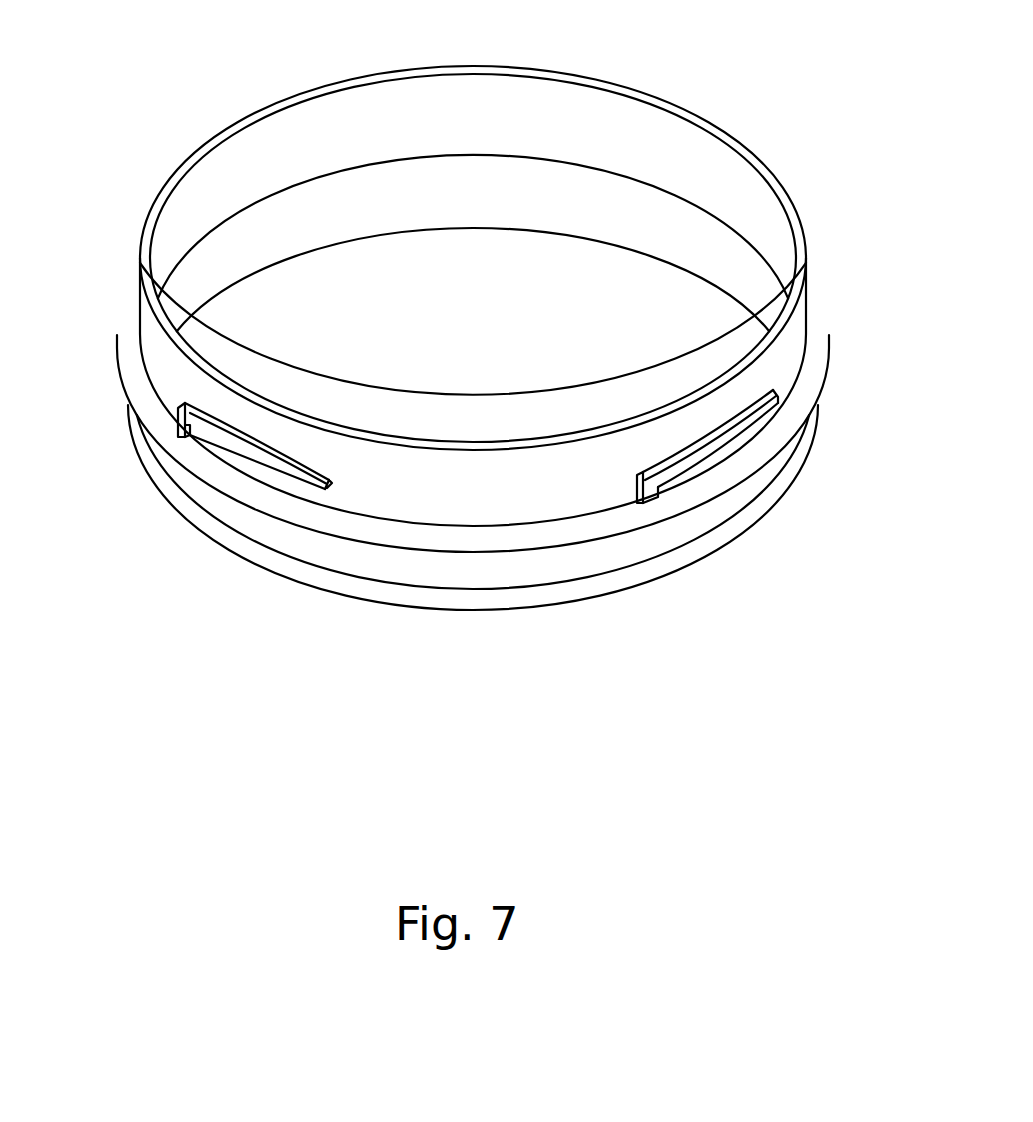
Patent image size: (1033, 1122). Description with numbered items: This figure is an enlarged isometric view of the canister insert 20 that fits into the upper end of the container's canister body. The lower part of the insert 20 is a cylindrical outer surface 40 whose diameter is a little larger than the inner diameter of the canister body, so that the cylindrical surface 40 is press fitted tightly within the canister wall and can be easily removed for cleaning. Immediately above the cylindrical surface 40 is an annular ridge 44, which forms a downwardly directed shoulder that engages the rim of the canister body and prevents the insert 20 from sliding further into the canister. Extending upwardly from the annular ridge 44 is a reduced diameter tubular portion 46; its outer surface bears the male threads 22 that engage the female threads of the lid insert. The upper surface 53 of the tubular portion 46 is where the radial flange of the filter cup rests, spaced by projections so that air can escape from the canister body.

The canister insert 20 is at (104, 160).
The male threads 22 is at (182, 420).
The cylindrical outer surface 40 is at (770, 475).
The annular ridge 44 is at (828, 346).
The tubular portion 46 is at (780, 357).
The upper surface 53 is at (197, 160).